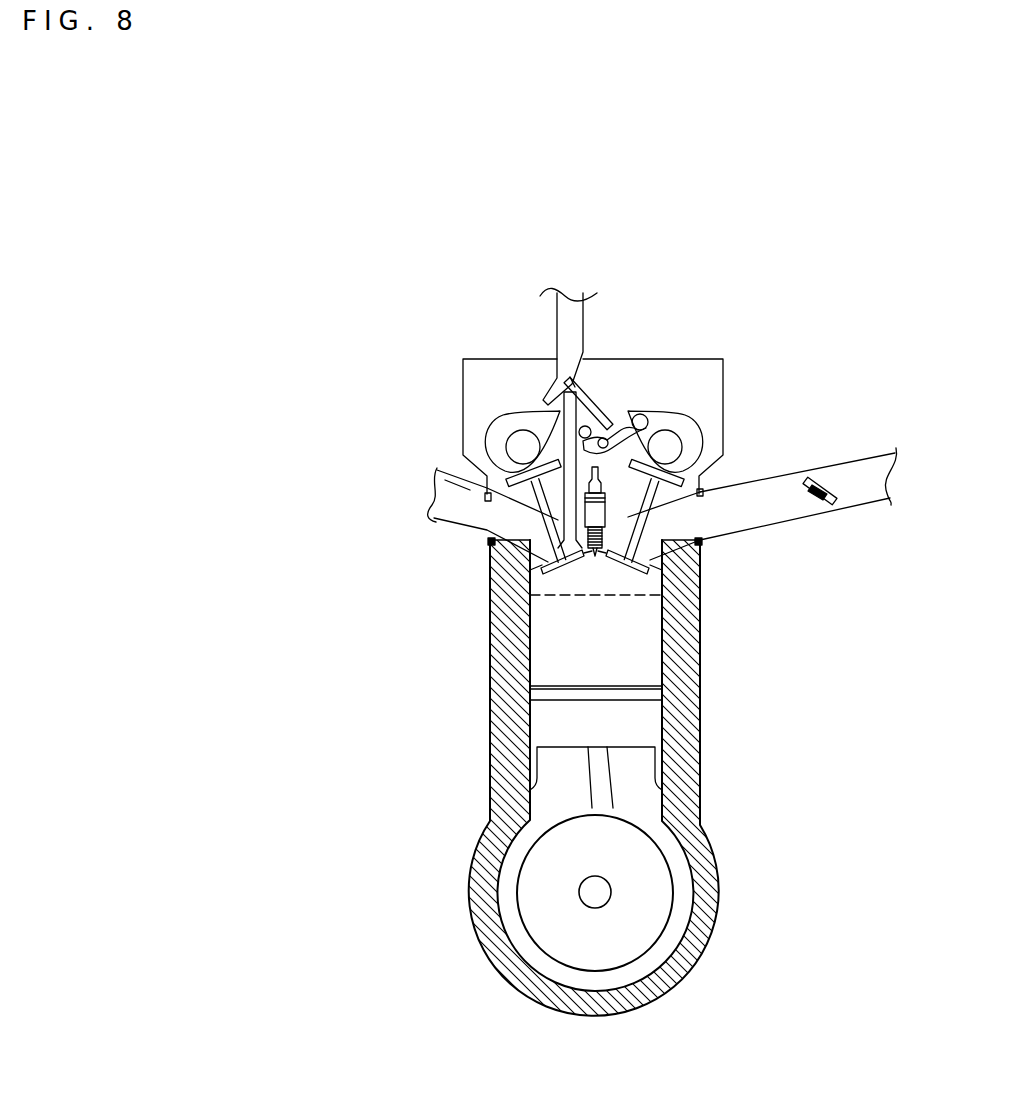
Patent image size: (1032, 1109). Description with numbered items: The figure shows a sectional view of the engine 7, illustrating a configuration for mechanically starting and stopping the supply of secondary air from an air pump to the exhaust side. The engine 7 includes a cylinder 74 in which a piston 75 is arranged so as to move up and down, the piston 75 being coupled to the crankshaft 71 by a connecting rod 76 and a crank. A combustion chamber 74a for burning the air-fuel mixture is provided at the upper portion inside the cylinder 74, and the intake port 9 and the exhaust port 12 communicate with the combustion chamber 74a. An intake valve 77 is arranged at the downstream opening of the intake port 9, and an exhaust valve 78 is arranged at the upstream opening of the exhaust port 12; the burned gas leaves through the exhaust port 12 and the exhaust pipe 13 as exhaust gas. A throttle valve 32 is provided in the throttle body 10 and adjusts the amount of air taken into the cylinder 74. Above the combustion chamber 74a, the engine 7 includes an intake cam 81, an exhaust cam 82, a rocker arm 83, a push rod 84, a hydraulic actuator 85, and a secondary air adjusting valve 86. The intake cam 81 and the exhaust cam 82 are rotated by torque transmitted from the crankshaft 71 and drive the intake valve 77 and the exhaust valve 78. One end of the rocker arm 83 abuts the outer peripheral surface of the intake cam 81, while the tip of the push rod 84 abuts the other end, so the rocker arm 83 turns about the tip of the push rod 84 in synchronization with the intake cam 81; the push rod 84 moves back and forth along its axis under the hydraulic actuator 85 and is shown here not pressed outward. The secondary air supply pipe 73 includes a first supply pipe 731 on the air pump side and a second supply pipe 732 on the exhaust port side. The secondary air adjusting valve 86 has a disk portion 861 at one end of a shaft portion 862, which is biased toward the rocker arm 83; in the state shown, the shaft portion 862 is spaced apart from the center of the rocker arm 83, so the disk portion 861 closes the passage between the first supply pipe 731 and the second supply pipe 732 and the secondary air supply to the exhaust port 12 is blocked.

The engine 7 is at (805, 183).
The intake port 9 is at (698, 595).
The throttle body 10 is at (760, 515).
The exhaust port 12 is at (513, 538).
The exhaust pipe 13 is at (467, 508).
The throttle valve 32 is at (832, 503).
The crankshaft 71 is at (600, 887).
The secondary air supply pipe 73 is at (505, 296).
The first supply pipe 731 is at (567, 331).
The second supply pipe 732 is at (570, 442).
The cylinder 74 is at (512, 718).
The combustion chamber 74a is at (577, 583).
The piston 75 is at (627, 728).
The connecting rod 76 is at (602, 783).
The intake valve 77 is at (662, 518).
The exhaust valve 78 is at (437, 470).
The intake cam 81 is at (680, 425).
The exhaust cam 82 is at (505, 428).
The rocker arm 83 is at (630, 430).
The push rod 84 is at (612, 511).
The hydraulic actuator 85 is at (590, 425).
The secondary air adjusting valve 86 is at (693, 206).
The disk portion 861 is at (580, 385).
The shaft portion 862 is at (597, 414).